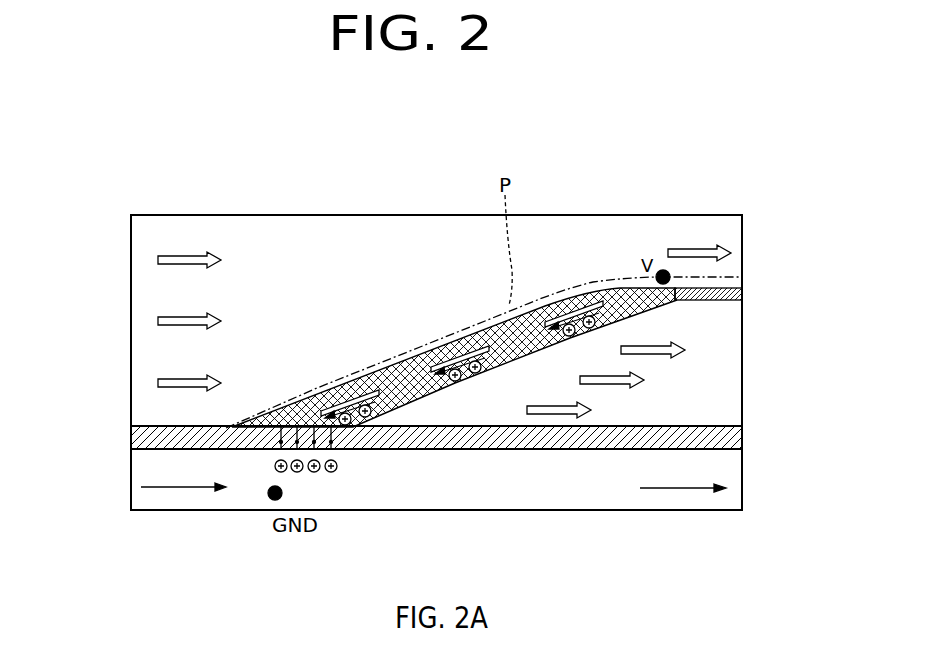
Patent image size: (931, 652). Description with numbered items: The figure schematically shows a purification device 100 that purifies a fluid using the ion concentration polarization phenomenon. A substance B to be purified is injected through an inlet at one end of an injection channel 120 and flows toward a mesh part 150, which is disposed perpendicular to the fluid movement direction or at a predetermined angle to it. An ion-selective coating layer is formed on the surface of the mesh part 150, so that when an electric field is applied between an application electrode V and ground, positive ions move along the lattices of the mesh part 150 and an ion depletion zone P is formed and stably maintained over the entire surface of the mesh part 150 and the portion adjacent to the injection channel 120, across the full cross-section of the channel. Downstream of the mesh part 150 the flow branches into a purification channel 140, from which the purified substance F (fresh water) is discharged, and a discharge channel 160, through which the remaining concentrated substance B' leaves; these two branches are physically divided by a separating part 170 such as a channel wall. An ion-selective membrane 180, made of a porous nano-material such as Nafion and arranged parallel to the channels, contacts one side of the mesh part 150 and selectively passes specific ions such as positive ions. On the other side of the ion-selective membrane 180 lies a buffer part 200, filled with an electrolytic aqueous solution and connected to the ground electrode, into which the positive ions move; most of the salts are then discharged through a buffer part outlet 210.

The purification device 100 is at (137, 180).
The injection channel 120 is at (150, 232).
The purification channel 140 is at (720, 355).
The mesh part 150 is at (467, 380).
The discharge channel 160 is at (730, 235).
The separating part 170 is at (745, 296).
The ion-selective membrane 180 is at (735, 439).
The buffer part 200 is at (161, 500).
The buffer part outlet 210 is at (690, 500).